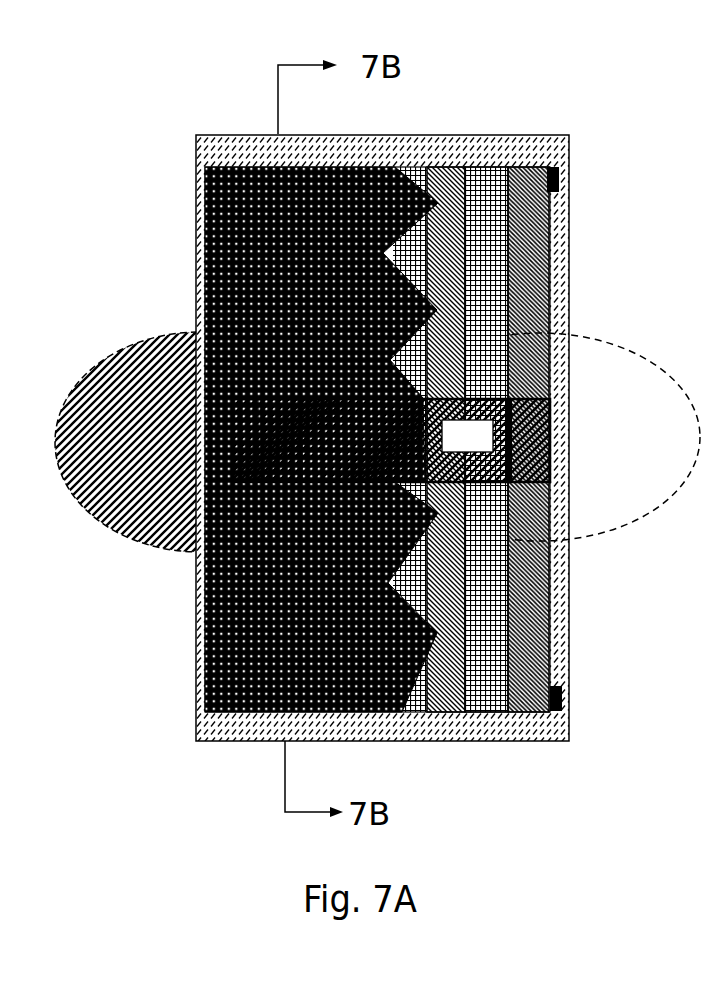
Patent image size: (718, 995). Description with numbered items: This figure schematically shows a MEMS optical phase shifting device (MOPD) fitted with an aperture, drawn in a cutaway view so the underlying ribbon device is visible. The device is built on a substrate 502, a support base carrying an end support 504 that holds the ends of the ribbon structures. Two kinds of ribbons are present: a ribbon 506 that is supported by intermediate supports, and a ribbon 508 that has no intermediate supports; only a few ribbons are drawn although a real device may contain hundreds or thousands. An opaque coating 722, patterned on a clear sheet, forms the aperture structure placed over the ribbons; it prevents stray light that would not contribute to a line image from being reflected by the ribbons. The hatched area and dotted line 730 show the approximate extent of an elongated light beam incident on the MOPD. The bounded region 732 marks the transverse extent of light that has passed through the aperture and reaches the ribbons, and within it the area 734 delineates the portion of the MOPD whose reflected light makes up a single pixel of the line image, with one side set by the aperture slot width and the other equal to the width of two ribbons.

The substrate 502 is at (565, 140).
The end support 504 is at (568, 176).
The ribbon 506 is at (490, 168).
The ribbon 508 is at (442, 168).
The opaque coating 722 is at (200, 203).
The light beam extent 730 is at (113, 363).
The bounded region 732 is at (551, 436).
The area 734 is at (453, 447).